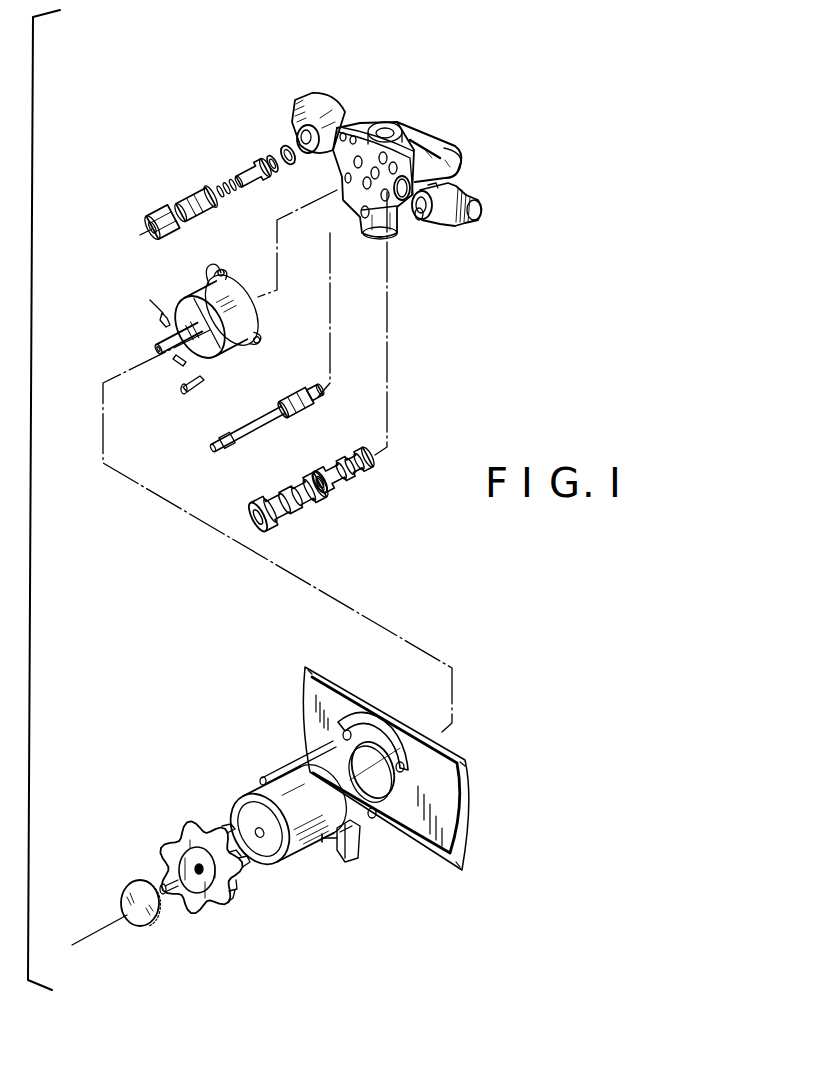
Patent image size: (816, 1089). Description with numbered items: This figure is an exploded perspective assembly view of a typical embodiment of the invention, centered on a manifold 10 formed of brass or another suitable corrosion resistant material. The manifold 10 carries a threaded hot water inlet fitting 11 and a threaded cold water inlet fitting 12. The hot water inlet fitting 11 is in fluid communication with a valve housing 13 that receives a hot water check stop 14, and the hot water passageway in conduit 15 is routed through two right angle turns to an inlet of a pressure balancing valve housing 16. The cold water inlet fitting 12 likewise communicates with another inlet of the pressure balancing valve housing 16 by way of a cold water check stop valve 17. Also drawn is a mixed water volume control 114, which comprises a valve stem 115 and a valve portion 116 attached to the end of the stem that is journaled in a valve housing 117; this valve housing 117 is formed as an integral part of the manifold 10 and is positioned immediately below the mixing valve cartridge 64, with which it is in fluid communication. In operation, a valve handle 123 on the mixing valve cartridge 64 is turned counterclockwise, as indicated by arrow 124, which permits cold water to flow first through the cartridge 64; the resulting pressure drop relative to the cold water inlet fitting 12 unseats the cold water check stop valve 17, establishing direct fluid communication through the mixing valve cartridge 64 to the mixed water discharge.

The manifold 10 is at (441, 146).
The hot water inlet fitting 11 is at (310, 97).
The cold water inlet fitting 12 is at (468, 186).
The valve housing 13 is at (291, 146).
The hot water check stop 14 is at (188, 172).
The conduit 15 is at (345, 128).
The pressure balancing valve housing 16 is at (446, 156).
The cold water check stop valve 17 is at (422, 219).
The mixing valve cartridge 64 is at (203, 288).
The mixed water volume control 114 is at (272, 424).
The valve stem 115 is at (258, 428).
The valve portion 116 is at (335, 383).
The valve housing 117 is at (364, 220).
The valve handle 123 is at (180, 813).
The arrow 124 is at (143, 863).